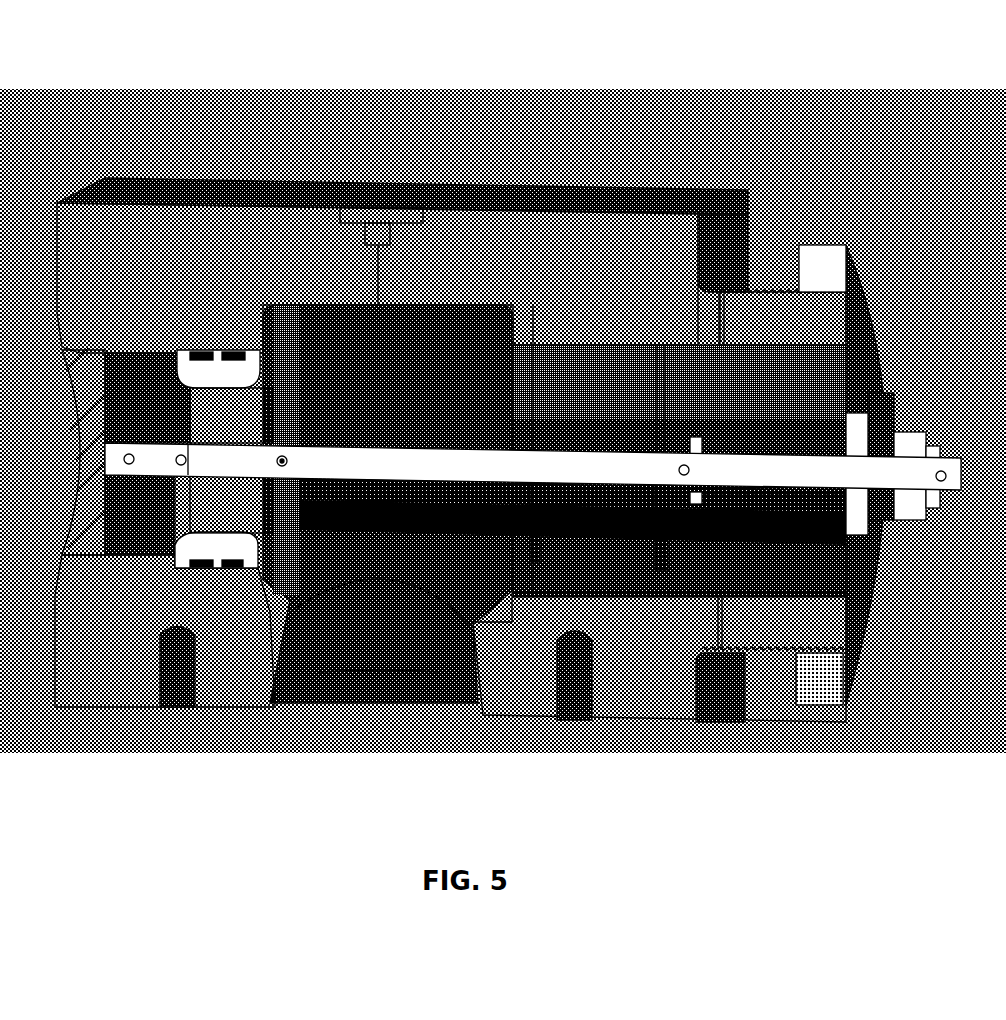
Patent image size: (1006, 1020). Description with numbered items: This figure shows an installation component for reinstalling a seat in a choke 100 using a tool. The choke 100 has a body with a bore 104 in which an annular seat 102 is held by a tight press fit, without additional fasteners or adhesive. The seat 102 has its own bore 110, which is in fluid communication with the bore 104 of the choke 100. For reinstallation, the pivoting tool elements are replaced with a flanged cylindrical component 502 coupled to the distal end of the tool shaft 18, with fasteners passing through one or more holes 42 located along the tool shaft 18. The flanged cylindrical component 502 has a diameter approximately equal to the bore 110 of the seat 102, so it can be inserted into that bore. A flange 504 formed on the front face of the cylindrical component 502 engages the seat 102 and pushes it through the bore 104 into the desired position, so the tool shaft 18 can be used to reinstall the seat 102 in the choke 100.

The choke 100 is at (419, 175).
The bore 104 is at (797, 397).
The bore of seat 110 is at (164, 400).
The flange 504 is at (279, 417).
The holes 42 is at (284, 470).
The tool shaft 18 is at (507, 470).
The annular seat 102 is at (210, 545).
The flanged cylindrical component 502 is at (233, 510).